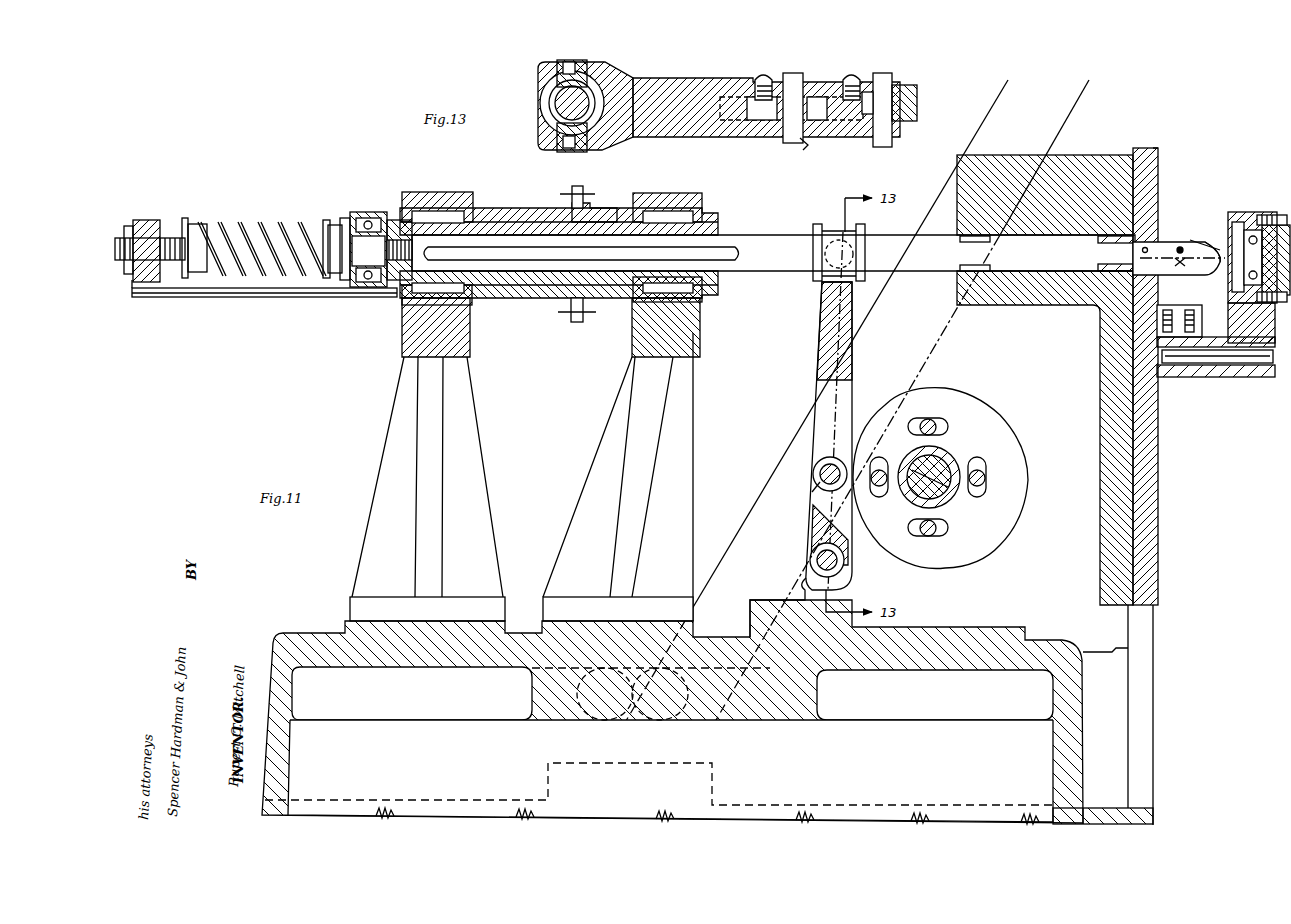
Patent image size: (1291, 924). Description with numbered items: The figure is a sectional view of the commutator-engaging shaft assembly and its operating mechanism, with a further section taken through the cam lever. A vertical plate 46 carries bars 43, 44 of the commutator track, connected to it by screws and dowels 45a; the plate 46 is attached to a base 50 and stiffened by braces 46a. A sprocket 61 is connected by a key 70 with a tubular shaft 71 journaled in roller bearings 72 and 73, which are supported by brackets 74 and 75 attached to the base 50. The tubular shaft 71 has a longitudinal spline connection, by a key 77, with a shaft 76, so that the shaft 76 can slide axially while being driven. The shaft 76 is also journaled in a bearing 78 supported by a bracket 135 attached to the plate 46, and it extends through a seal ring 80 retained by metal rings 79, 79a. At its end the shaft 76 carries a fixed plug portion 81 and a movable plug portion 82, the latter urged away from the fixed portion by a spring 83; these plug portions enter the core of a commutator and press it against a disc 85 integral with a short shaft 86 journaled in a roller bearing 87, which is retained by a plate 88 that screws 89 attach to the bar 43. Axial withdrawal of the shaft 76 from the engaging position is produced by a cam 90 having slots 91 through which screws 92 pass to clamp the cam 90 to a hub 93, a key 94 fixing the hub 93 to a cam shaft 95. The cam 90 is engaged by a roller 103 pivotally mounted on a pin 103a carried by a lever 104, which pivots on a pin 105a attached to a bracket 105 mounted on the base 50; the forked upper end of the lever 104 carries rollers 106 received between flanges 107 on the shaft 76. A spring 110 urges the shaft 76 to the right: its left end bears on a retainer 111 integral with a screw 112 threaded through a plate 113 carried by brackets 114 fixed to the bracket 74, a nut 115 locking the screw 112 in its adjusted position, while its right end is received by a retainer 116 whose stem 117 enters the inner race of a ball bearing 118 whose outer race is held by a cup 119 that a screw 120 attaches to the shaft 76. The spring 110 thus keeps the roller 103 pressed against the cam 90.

In FIG. 11, the bar 43 is at (1270, 225).
In FIG. 11, the bar 44 is at (1200, 377).
In FIG. 11, the dowel 45a is at (1245, 377).
In FIG. 11, the vertical plate 46 is at (1158, 470).
In FIG. 11, the brace 46a is at (766, 488).
In FIG. 11, the base 50 is at (283, 633).
In FIG. 11, the sprocket 61 is at (583, 186).
In FIG. 11, the key 70 is at (622, 196).
In FIG. 11, the tubular shaft 71 is at (530, 208).
In FIG. 11, the roller bearing 72 is at (450, 192).
In FIG. 11, the roller bearing 73 is at (672, 193).
In FIG. 11, the bracket 74 is at (395, 400).
In FIG. 11, the bracket 75 is at (695, 375).
In FIG. 13, the shaft 76 is at (558, 115).
In FIG. 11, the shaft 76 is at (790, 235).
In FIG. 11, the key 77 is at (742, 253).
In FIG. 11, the bearing 78 is at (960, 238).
In FIG. 11, the metal ring 79 is at (1140, 258).
In FIG. 11, the metal ring 79a is at (1095, 245).
In FIG. 11, the seal ring 80 is at (1097, 307).
In FIG. 11, the fixed plug portion 81 is at (1212, 270).
In FIG. 11, the movable plug portion 82 is at (1210, 240).
In FIG. 11, the spring 83 is at (1180, 265).
In FIG. 11, the disc 85 is at (1232, 222).
In FIG. 11, the short shaft 86 is at (1215, 308).
In FIG. 11, the roller bearing 87 is at (1253, 230).
In FIG. 11, the plate 88 is at (1228, 318).
In FIG. 11, the screw 89 is at (1283, 215).
In FIG. 11, the cam 90 is at (985, 430).
In FIG. 11, the slot 91 is at (948, 427).
In FIG. 11, the screw 92 is at (932, 420).
In FIG. 11, the hub 93 is at (905, 480).
In FIG. 11, the key 94 is at (948, 465).
In FIG. 11, the cam shaft 95 is at (942, 490).
In FIG. 13, the roller 103 is at (783, 125).
In FIG. 11, the roller 103 is at (815, 470).
In FIG. 13, the pin 103a is at (798, 152).
In FIG. 11, the pin 103a is at (796, 491).
In FIG. 13, the lever 104 is at (725, 78).
In FIG. 11, the lever 104 is at (822, 380).
In FIG. 13, the bracket 105 is at (917, 105).
In FIG. 11, the bracket 105 is at (805, 572).
In FIG. 13, the pin 105a is at (892, 78).
In FIG. 11, the pin 105a is at (806, 556).
In FIG. 13, the roller 106 is at (557, 70).
In FIG. 11, the roller 106 is at (818, 224).
In FIG. 13, the flange 107 is at (605, 78).
In FIG. 11, the flange 107 is at (813, 278).
In FIG. 11, the spring 110 is at (252, 222).
In FIG. 11, the retainer 111 is at (196, 224).
In FIG. 11, the screw 112 is at (180, 238).
In FIG. 11, the plate 113 is at (150, 220).
In FIG. 11, the bracket 114 is at (288, 297).
In FIG. 11, the nut 115 is at (133, 288).
In FIG. 11, the retainer 116 is at (335, 220).
In FIG. 11, the stem 117 is at (362, 214).
In FIG. 11, the ball bearing 118 is at (362, 282).
In FIG. 11, the cup 119 is at (383, 285).
In FIG. 11, the screw 120 is at (398, 222).
In FIG. 11, the bracket 135 is at (1040, 145).